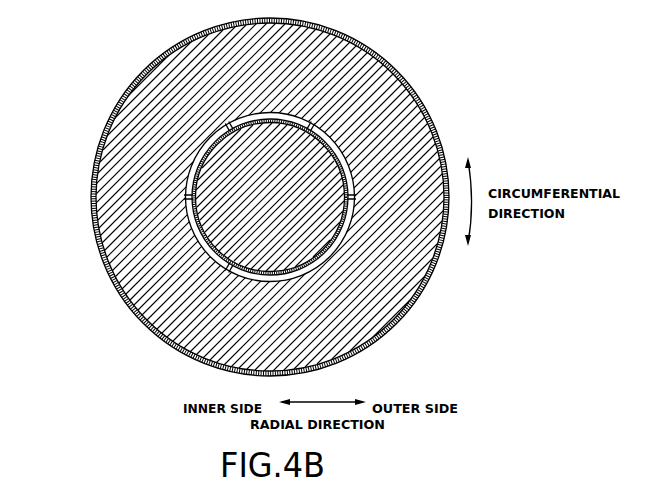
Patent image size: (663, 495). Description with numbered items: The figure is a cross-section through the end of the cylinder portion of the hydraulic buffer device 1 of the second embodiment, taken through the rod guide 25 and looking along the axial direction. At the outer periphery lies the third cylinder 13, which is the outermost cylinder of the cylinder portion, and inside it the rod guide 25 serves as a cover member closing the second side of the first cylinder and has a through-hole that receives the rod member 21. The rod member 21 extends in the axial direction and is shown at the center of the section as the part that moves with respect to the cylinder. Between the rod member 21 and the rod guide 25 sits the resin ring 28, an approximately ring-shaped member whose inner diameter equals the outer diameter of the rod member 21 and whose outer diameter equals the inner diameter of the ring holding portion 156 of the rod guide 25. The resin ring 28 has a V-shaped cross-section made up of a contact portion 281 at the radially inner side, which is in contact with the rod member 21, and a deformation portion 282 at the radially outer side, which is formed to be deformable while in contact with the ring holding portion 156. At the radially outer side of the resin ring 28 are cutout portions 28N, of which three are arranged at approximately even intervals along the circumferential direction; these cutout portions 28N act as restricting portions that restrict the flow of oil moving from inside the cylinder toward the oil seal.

The hydraulic buffer device 1 is at (86, 56).
The third cylinder 13 is at (403, 70).
The rod guide 25 is at (427, 118).
The resin ring 28 is at (346, 231).
The contact portion 281 is at (349, 224).
The deformation portion 282 is at (329, 253).
The cutout portion 28N is at (228, 122).
The ring holding portion 156 is at (324, 126).
The rod member 21 is at (194, 193).